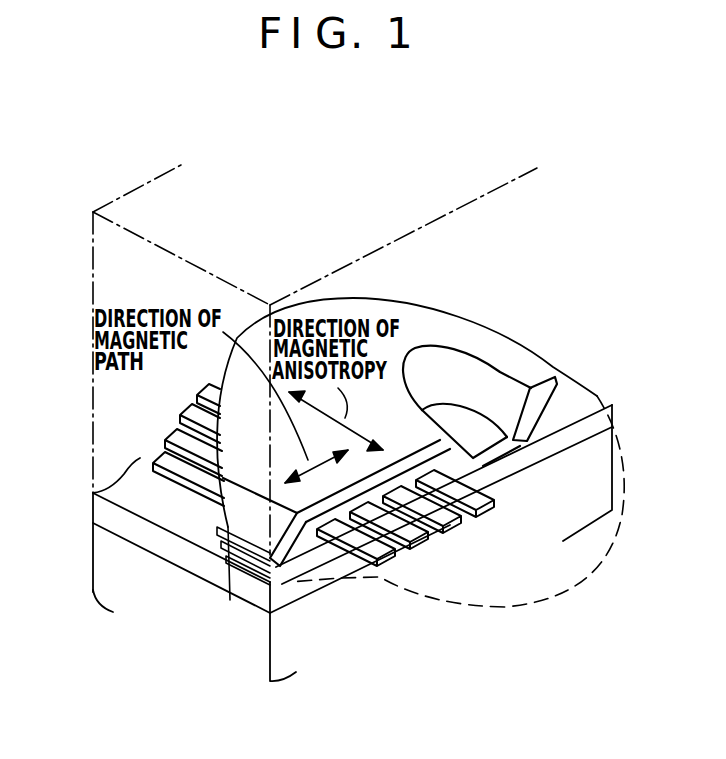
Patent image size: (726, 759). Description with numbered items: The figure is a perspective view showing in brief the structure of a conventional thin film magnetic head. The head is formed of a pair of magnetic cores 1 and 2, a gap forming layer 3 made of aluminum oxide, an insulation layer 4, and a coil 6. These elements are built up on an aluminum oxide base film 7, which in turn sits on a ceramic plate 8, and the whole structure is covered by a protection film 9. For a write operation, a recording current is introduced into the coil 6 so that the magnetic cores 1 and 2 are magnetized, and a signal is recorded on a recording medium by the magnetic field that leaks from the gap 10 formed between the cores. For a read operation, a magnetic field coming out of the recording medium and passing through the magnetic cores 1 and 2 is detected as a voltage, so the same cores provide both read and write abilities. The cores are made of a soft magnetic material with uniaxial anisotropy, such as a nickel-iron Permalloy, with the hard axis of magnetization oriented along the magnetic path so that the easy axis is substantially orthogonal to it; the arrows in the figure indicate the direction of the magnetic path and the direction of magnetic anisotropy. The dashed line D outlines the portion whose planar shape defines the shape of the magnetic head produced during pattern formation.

The magnetic core 1 is at (283, 588).
The magnetic core 2 is at (437, 310).
The gap forming layer 3 is at (318, 552).
The insulation layer 4 is at (322, 545).
The coil 6 is at (385, 560).
The Al2O3 base film 7 is at (158, 547).
The ceramic plate 8 is at (94, 606).
The protection film 9 is at (100, 253).
The gap 10 is at (236, 582).
The dashed line D is at (478, 614).